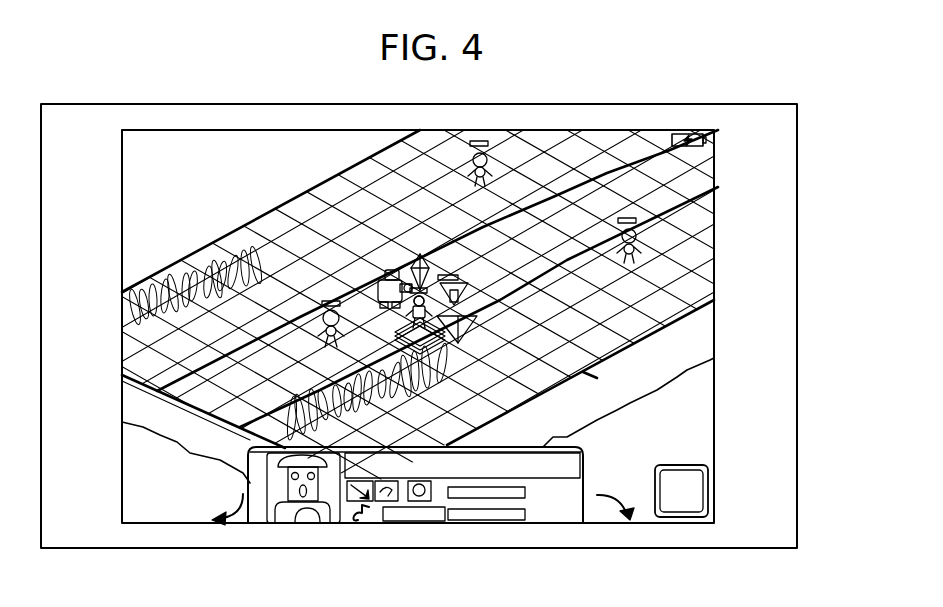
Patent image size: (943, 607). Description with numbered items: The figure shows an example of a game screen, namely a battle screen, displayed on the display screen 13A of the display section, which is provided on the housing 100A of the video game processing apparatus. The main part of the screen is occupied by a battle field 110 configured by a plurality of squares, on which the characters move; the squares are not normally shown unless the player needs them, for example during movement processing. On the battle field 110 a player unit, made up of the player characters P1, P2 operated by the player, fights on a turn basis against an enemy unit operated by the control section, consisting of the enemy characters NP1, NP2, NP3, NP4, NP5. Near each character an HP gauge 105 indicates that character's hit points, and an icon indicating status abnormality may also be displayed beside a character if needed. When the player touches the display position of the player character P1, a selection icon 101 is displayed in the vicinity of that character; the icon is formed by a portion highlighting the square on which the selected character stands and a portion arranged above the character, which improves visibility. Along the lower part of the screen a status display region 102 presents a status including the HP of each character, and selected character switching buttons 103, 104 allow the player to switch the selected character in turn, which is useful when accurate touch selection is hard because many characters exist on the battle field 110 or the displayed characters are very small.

The housing 100A is at (797, 333).
The display screen 13A is at (715, 387).
The battle field 110 is at (598, 375).
The selection icon 101 is at (418, 254).
The HP gauge 105 is at (428, 285).
The status display region 102 is at (367, 527).
The selected character switching button 103 is at (212, 522).
The selected character switching button 104 is at (629, 520).
The player character P1 is at (394, 332).
The player character P2 is at (322, 340).
The enemy character NP1 is at (468, 292).
The enemy character NP2 is at (376, 277).
The enemy character NP3 is at (468, 330).
The enemy character NP4 is at (490, 164).
The enemy character NP5 is at (643, 237).